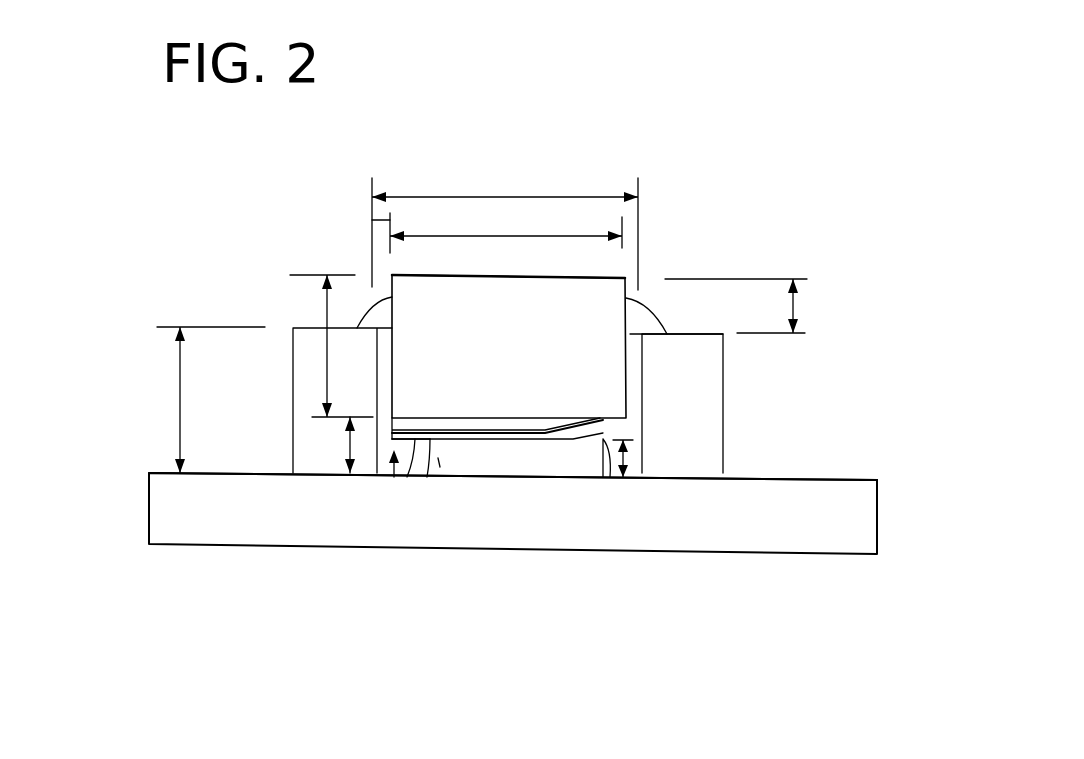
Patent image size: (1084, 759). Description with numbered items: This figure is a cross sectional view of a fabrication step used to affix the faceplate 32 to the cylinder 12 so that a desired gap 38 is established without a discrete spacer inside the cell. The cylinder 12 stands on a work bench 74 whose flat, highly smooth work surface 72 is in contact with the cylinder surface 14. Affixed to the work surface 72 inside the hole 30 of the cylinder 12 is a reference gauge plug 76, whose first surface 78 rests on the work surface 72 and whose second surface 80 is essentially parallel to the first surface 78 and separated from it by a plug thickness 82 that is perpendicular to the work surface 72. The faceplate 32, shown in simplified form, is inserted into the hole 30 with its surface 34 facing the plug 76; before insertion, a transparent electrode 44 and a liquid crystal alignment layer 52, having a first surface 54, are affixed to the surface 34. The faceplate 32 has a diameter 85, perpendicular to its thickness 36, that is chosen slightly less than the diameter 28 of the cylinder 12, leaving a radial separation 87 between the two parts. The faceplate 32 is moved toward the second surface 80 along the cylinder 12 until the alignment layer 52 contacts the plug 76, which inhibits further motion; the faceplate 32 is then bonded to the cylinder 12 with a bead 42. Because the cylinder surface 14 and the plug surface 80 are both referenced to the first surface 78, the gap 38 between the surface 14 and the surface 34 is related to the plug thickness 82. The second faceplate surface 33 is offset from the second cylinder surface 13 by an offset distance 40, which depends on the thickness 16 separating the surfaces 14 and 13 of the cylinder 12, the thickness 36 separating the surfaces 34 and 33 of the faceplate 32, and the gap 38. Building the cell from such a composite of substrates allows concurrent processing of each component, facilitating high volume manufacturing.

The cylinder 12 is at (707, 460).
The second cylinder surface 13 is at (692, 328).
The cylinder surface 14 is at (303, 478).
The thickness 16 is at (172, 372).
The diameter 28 is at (522, 192).
The hole 30 is at (392, 477).
The faceplate 32 is at (607, 400).
The second faceplate surface 33 is at (565, 273).
The faceplate surface 34 is at (600, 437).
The thickness 36 is at (323, 310).
The gap 38 is at (342, 445).
The offset distance 40 is at (788, 303).
The bead 42 is at (647, 298).
The transparent electrode 44 is at (427, 427).
The liquid crystal alignment layer 52 is at (438, 467).
The first surface 54 is at (403, 477).
The work surface 72 is at (850, 478).
The work bench 74 is at (762, 535).
The reference gauge plug 76 is at (394, 477).
The first surface 78 is at (470, 433).
The second surface 80 is at (548, 443).
The plug thickness 82 is at (630, 457).
The diameter 85 is at (538, 230).
The radial separation 87 is at (378, 215).